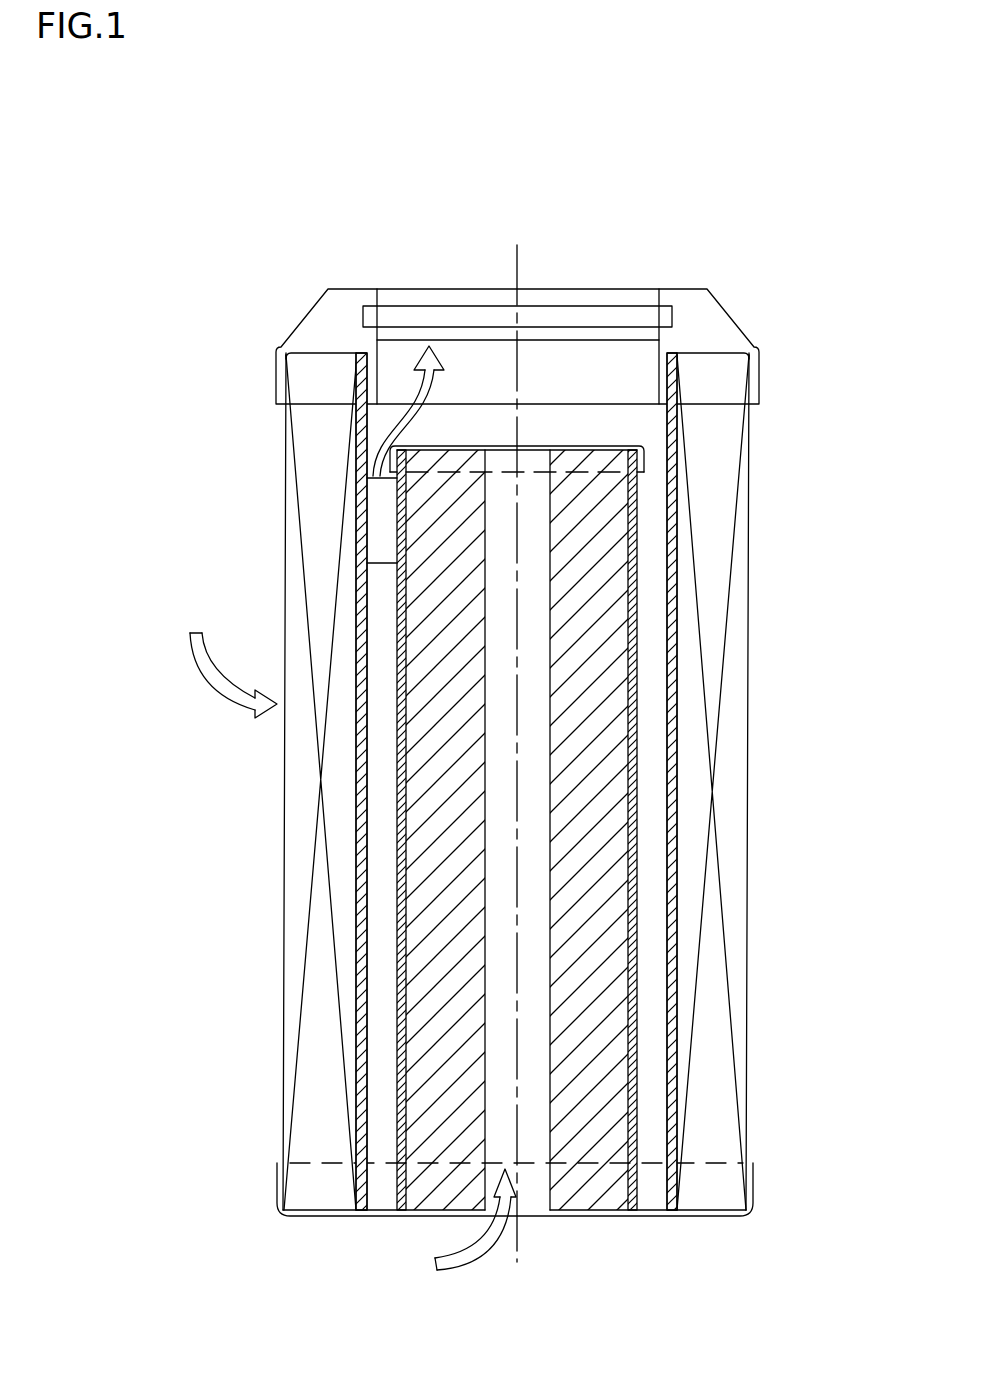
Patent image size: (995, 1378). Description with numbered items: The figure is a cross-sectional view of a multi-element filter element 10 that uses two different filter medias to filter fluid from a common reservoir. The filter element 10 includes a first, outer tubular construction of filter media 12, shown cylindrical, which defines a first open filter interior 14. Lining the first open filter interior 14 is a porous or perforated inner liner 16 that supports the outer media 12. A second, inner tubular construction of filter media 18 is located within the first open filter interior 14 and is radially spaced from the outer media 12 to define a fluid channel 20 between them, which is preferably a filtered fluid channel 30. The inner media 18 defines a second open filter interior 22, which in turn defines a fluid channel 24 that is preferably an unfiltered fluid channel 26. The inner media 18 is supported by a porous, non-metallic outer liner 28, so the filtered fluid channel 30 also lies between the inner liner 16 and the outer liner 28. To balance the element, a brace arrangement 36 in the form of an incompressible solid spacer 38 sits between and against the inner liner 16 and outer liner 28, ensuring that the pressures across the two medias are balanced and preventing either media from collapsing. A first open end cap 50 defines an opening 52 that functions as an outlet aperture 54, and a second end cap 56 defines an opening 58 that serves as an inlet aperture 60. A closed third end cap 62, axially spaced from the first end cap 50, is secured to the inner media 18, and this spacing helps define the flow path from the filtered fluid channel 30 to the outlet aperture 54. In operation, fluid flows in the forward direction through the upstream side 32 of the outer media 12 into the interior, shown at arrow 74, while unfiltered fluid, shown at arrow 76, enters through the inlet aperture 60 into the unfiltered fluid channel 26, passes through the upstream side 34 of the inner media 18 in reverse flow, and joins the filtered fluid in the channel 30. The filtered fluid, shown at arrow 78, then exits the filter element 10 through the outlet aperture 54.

The filter element 10 is at (790, 254).
The first outer tubular construction of filter media 12 is at (283, 892).
The first open filter interior 14 is at (390, 1096).
The inner liner 16 is at (355, 1050).
The second inner tubular construction of filter media 18 is at (632, 811).
The fluid channel 20 is at (662, 965).
The second open filter interior 22 is at (551, 747).
The fluid channel 24 is at (551, 672).
The unfiltered fluid channel 26 is at (551, 614).
The outer liner 28 is at (635, 1022).
The filtered fluid channel 30 is at (390, 938).
The upstream side 32 is at (283, 815).
The upstream side 34 is at (479, 870).
The brace arrangement 36 is at (375, 510).
The incompressible solid spacer 38 is at (382, 563).
The first open end cap 50 is at (725, 327).
The opening or aperture 52 is at (380, 358).
The outlet aperture 54 is at (658, 363).
The second end cap 56 is at (310, 1209).
The opening or aperture 58 is at (541, 1217).
The inlet aperture 60 is at (484, 1219).
The third end cap 62 is at (572, 448).
The arrow 74 is at (212, 689).
The arrow 76 is at (480, 1257).
The arrow 78 is at (433, 391).